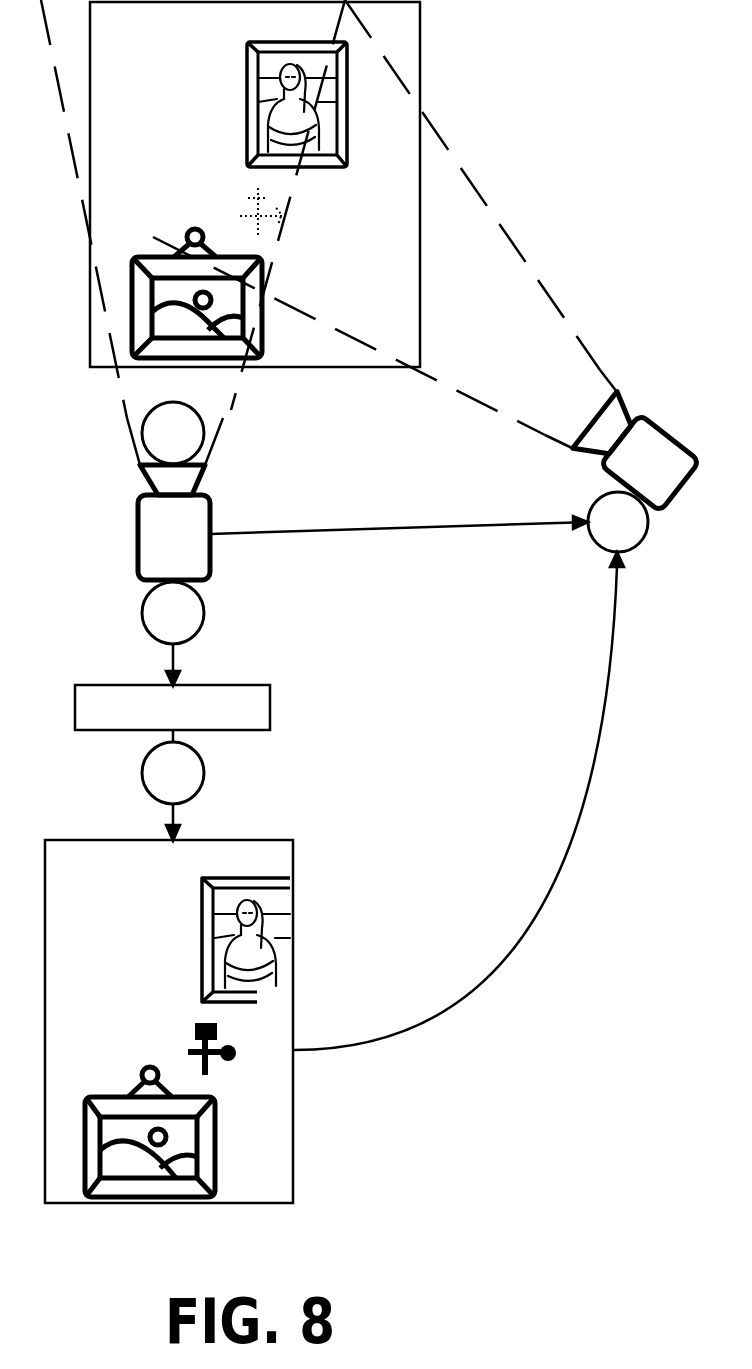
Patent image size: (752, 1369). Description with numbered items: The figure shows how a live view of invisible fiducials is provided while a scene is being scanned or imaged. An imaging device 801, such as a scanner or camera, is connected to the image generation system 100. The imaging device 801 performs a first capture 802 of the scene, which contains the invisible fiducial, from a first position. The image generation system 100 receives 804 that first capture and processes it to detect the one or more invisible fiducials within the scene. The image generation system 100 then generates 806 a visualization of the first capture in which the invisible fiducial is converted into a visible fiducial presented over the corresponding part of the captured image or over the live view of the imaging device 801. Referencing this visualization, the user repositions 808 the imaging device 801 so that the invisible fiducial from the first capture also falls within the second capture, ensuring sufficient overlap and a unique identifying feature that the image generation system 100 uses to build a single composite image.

The imaging device 801 is at (157, 549).
The first capture step 802 is at (156, 444).
The receiving step 804 is at (156, 624).
The image generation system 100 is at (156, 718).
The visualization generating step 806 is at (156, 784).
The repositioning step 808 is at (601, 533).